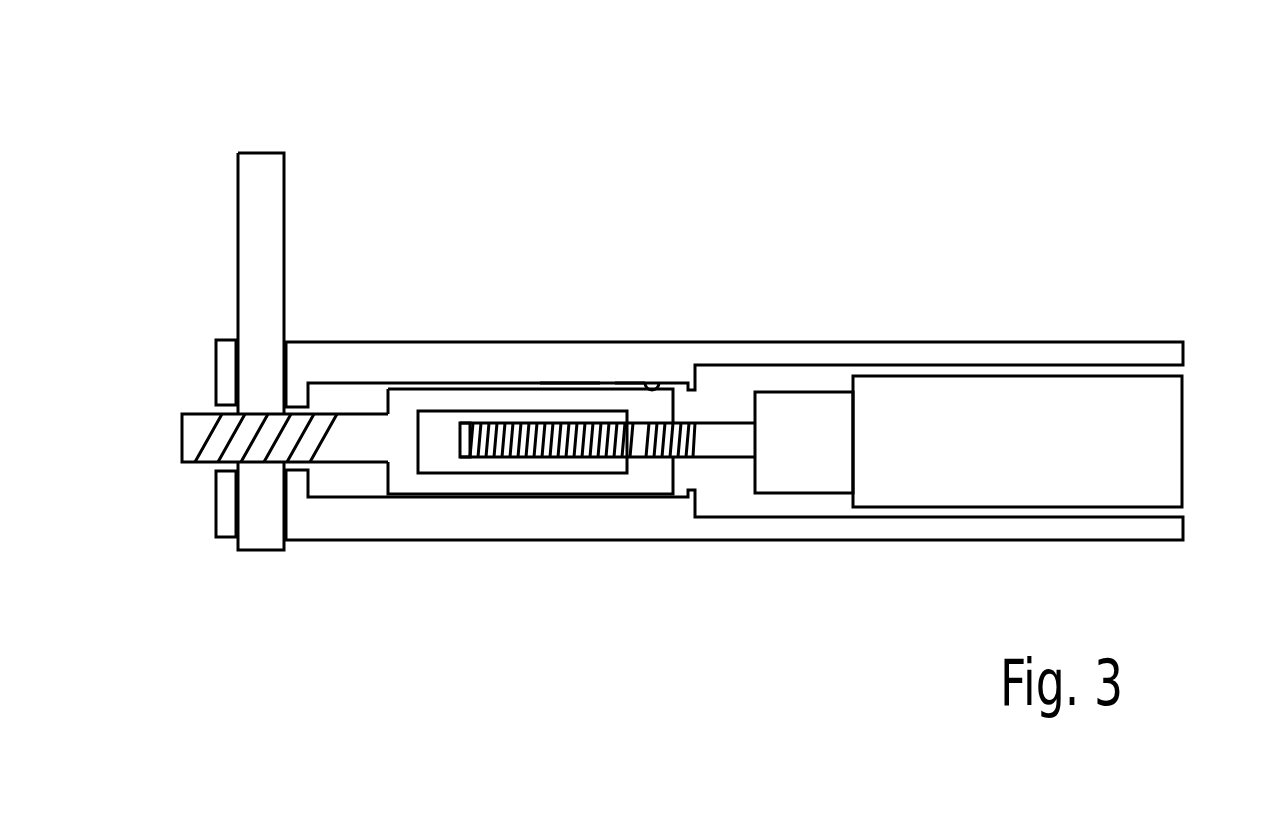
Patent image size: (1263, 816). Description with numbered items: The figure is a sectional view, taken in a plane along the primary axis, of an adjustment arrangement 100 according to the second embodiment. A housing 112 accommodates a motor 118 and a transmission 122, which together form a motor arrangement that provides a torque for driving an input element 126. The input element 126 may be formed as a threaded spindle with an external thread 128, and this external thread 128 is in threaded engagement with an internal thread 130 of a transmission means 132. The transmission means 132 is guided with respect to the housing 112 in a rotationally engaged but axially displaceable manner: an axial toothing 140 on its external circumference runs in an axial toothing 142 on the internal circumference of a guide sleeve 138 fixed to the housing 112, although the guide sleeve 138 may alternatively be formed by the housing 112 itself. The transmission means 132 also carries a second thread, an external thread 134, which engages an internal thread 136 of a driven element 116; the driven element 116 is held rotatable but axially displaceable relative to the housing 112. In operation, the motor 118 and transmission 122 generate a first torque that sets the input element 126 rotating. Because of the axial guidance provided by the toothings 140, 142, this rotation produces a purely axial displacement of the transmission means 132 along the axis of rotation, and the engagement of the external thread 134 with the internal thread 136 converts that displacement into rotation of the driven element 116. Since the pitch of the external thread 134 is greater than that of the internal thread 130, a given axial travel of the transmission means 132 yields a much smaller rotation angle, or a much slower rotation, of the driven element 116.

The adjustment arrangement 100 is at (1152, 162).
The housing 112 is at (393, 342).
The driven element 116 is at (270, 198).
The motor 118 is at (1012, 464).
The transmission 122 is at (826, 460).
The input element 126 is at (460, 446).
The external thread 128 is at (593, 460).
The internal thread 130 is at (635, 458).
The transmission means 132 is at (520, 482).
The external thread 134 is at (208, 465).
The internal thread 136 is at (253, 458).
The guide sleeve 138 is at (578, 375).
The axial toothing 140 is at (635, 382).
The axial toothing 142 is at (657, 388).